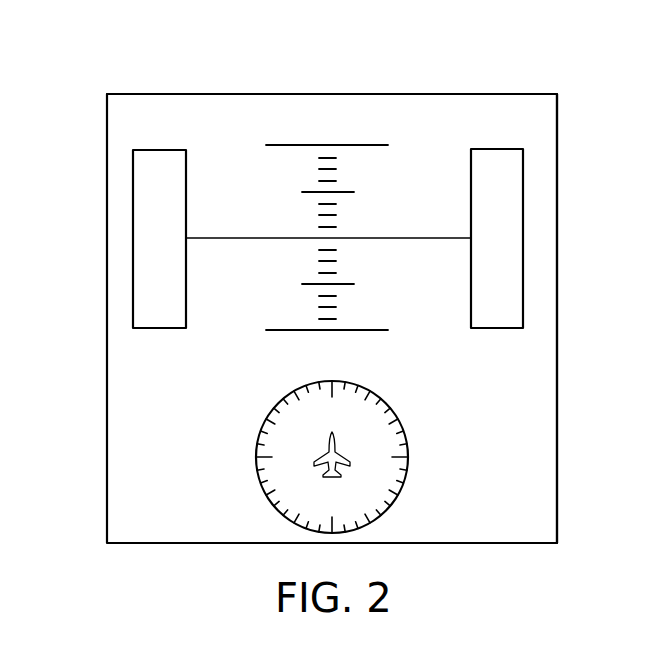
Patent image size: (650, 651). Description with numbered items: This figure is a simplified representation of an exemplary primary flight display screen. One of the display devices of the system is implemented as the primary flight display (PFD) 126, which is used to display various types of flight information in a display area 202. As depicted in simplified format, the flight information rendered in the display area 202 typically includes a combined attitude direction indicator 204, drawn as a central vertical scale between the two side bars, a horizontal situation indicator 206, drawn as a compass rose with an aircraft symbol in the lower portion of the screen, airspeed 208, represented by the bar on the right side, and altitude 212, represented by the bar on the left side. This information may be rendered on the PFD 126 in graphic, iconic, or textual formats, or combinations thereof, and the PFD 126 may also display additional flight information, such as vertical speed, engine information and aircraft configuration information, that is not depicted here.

The primary flight display 126 is at (157, 94).
The display area 202 is at (504, 112).
The combined attitude direction indicator 204 is at (355, 145).
The horizontal situation indicator 206 is at (258, 440).
The airspeed 208 is at (514, 229).
The altitude 212 is at (133, 222).